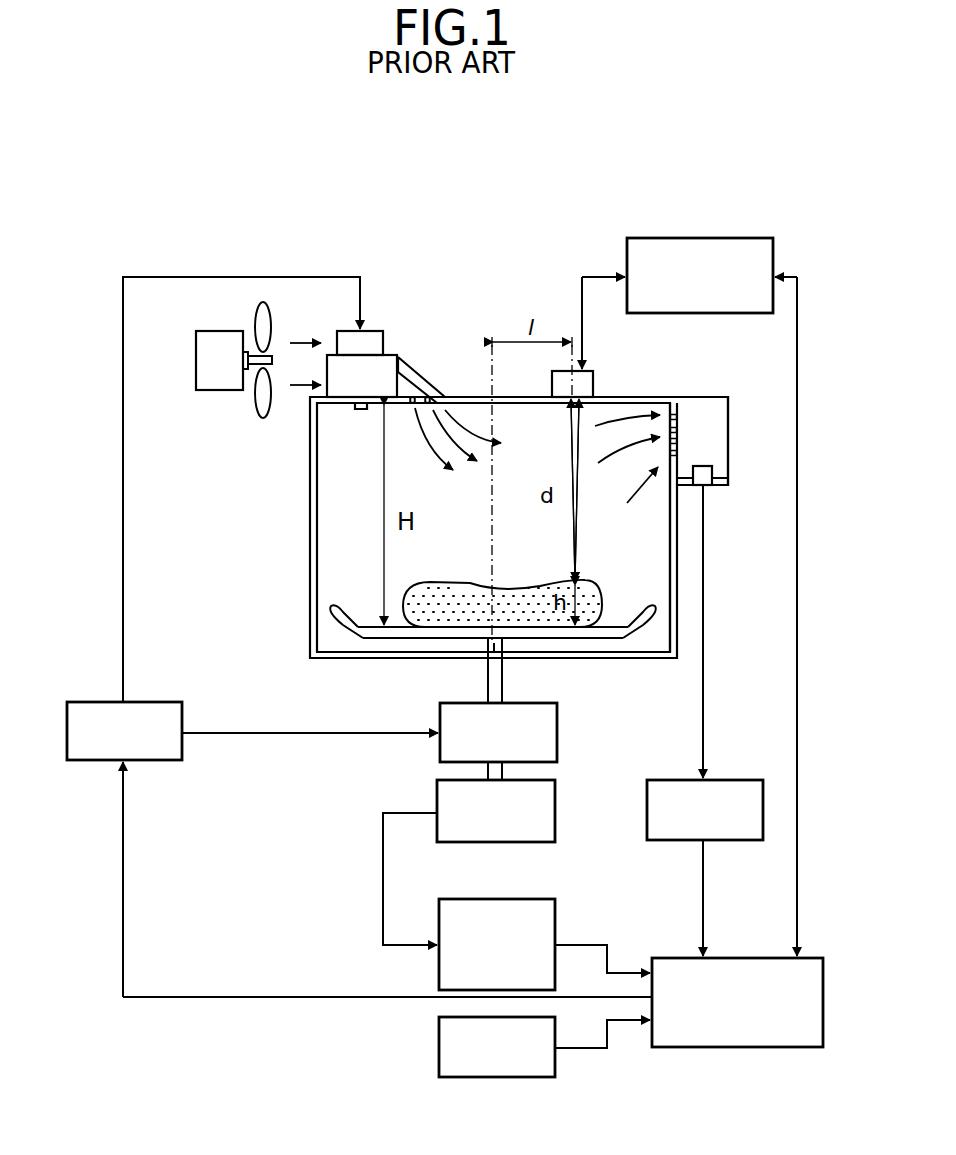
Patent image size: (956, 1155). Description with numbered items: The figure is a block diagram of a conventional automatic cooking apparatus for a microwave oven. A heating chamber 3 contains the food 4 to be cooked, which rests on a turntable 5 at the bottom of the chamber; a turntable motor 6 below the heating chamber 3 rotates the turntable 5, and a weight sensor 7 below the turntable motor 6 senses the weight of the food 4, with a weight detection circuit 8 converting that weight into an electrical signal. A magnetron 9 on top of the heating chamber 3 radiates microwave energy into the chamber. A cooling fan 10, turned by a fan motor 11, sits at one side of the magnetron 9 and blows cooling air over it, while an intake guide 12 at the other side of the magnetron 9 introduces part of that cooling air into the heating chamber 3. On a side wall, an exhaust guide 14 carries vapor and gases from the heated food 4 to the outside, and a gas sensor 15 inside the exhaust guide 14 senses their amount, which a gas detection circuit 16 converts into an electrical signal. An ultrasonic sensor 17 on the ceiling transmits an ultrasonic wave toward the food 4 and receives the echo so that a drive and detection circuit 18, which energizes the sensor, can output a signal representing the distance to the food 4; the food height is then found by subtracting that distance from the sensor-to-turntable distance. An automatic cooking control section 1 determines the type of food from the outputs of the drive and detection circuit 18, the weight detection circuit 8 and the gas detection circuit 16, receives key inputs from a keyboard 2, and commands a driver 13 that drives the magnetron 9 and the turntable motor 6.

The automatic cooking control section 1 is at (728, 1050).
The keyboard 2 is at (439, 1052).
The heating chamber 3 is at (310, 533).
The food 4 is at (455, 587).
The turntable 5 is at (343, 627).
The turntable motor 6 is at (557, 735).
The weight sensor 7 is at (555, 808).
The weight detection circuit 8 is at (490, 899).
The magnetron 9 is at (377, 362).
The cooling fan 10 is at (263, 302).
The fan motor 11 is at (208, 331).
The intake guide 12 is at (420, 357).
The driver 13 is at (172, 762).
The exhaust guide 14 is at (713, 430).
The gas sensor 15 is at (712, 470).
The gas detection circuit 16 is at (738, 780).
The ultrasonic sensor 17 is at (586, 385).
The drive and detection circuit 18 is at (705, 238).